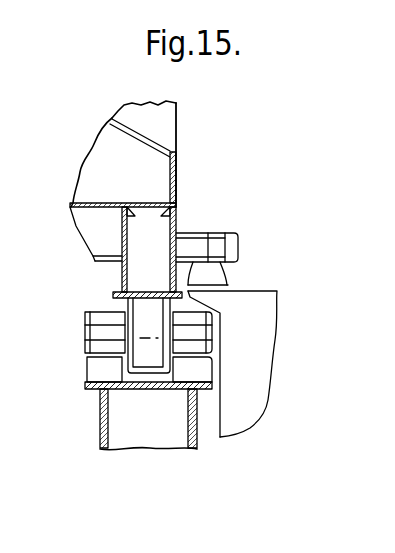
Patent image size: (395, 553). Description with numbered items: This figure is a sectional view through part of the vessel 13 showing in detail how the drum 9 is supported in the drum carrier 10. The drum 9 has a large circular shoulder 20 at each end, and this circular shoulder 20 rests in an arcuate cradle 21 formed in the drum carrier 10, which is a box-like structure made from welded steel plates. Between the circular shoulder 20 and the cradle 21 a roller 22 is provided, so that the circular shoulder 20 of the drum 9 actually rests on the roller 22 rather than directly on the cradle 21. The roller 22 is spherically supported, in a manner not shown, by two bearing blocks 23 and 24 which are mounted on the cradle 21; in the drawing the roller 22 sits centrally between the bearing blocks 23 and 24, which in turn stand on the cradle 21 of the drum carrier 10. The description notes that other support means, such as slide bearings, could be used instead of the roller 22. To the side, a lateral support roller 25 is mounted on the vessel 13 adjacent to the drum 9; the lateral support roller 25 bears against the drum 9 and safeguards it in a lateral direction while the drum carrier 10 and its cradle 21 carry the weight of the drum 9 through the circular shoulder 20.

The drum 9 is at (155, 175).
The drum carrier 10 is at (115, 416).
The vessel 13 is at (238, 412).
The circular shoulder 20 is at (113, 297).
The arcuate cradle 21 is at (132, 389).
The roller 22 is at (143, 327).
The bearing block 23 is at (97, 370).
The bearing block 24 is at (198, 370).
The lateral support roller 25 is at (227, 247).